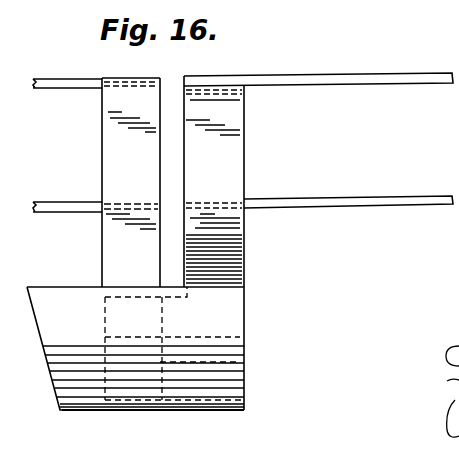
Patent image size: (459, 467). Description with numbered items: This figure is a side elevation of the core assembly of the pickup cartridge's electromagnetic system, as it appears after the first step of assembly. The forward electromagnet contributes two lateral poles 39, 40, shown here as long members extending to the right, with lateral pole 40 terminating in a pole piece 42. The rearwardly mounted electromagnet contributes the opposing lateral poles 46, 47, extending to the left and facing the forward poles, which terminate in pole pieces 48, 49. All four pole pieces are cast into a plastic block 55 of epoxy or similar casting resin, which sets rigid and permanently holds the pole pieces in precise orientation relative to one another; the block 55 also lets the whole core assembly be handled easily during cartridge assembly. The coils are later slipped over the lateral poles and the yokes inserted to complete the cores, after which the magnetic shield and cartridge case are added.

The lateral pole 39 is at (377, 75).
The lateral pole 40 is at (375, 207).
The pole piece 42 is at (232, 312).
The lateral pole 46 is at (55, 80).
The lateral pole 47 is at (55, 212).
The pole piece 48 is at (209, 388).
The pole piece 49 is at (102, 316).
The epoxy resin block 55 is at (235, 390).